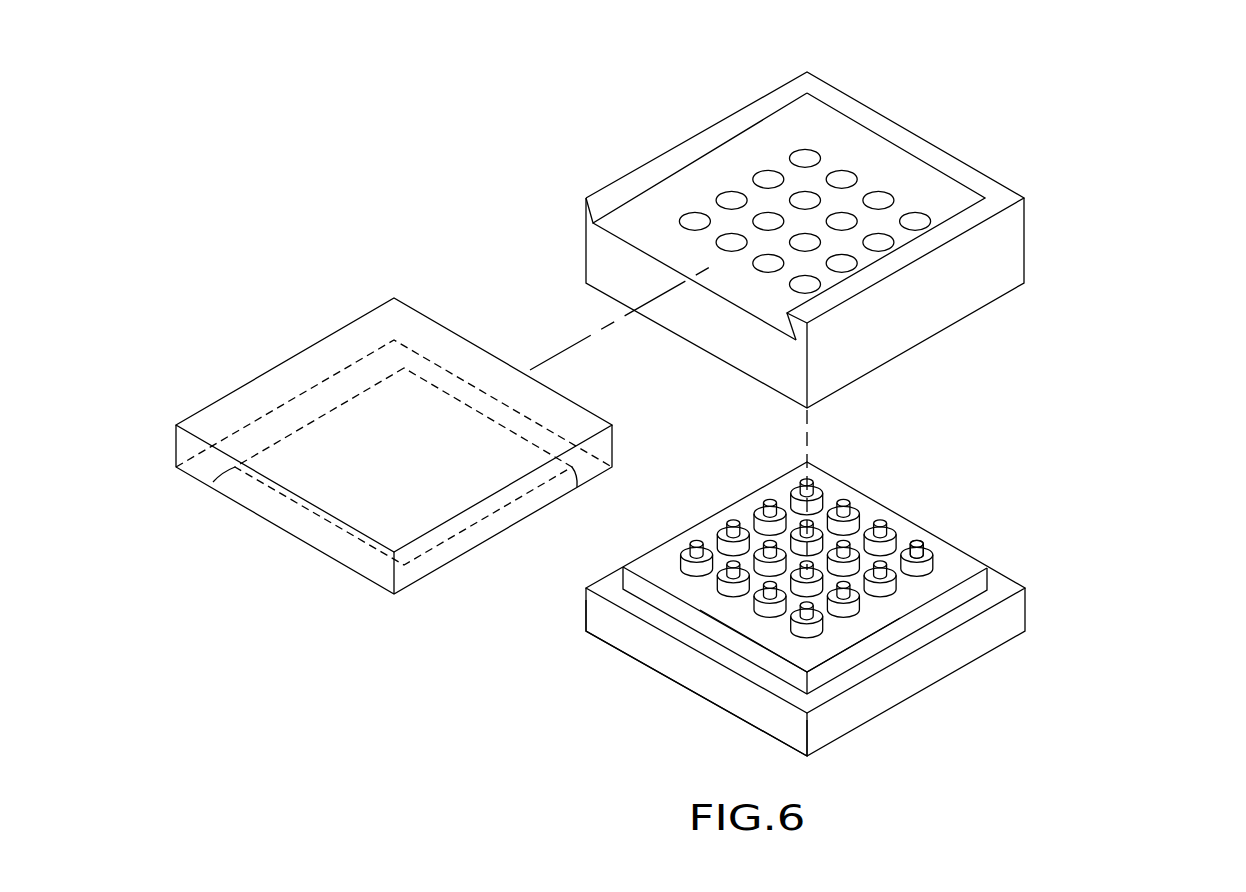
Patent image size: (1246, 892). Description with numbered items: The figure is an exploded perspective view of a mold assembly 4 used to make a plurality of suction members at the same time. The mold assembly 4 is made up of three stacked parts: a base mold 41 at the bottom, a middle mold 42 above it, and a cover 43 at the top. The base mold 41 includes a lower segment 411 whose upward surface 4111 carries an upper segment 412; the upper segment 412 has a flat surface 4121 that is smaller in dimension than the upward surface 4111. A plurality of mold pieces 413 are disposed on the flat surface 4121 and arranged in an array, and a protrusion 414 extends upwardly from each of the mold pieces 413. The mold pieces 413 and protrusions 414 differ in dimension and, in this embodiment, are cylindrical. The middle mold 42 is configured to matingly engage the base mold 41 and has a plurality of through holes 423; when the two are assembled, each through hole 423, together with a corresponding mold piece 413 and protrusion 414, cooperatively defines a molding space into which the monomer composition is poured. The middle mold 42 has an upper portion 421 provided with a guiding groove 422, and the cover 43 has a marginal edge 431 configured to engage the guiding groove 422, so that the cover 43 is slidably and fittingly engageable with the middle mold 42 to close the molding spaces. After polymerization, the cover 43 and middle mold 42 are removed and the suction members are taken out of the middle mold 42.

The mold assembly 4 is at (1207, 68).
The base mold 41 is at (1145, 525).
The lower segment 411 is at (1032, 611).
The upward surface 4111 is at (702, 645).
The upper segment 412 is at (975, 585).
The flat surface 4121 is at (908, 600).
The mold pieces 413 is at (932, 562).
The protrusions 414 is at (913, 545).
The middle mold 42 is at (1070, 157).
The upper portion 421 is at (983, 258).
The guiding groove 422 is at (635, 215).
The through holes 423 is at (915, 220).
The cover 43 is at (293, 310).
The marginal edge 431 is at (488, 525).